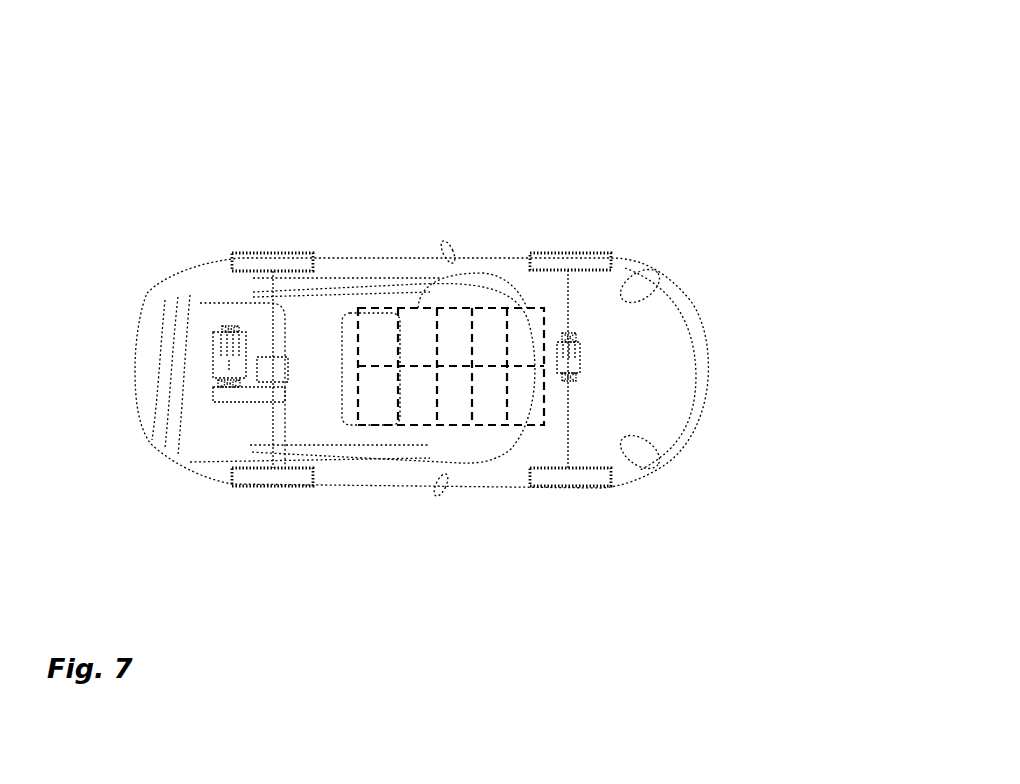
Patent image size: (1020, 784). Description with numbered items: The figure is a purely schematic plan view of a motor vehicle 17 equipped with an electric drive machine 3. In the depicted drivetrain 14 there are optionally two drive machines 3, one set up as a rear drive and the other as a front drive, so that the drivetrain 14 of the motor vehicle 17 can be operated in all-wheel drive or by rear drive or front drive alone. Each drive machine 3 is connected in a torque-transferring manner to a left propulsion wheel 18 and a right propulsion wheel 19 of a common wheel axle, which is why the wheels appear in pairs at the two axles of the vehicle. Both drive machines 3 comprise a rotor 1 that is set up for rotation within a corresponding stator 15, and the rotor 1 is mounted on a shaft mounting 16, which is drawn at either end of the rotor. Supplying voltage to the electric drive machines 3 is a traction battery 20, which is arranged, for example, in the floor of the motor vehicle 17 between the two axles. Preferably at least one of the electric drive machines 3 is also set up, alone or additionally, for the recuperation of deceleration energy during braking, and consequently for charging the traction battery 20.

The rotor 1 is at (224, 316).
The electric drive machine 3 is at (141, 583).
The drivetrain 14 is at (208, 622).
The stator 15 is at (213, 352).
The shaft mounting 16 is at (222, 329).
The motor vehicle 17 is at (826, 51).
The left propulsion wheel 18 is at (302, 253).
The right propulsion wheel 19 is at (292, 478).
The traction battery 20 is at (453, 426).